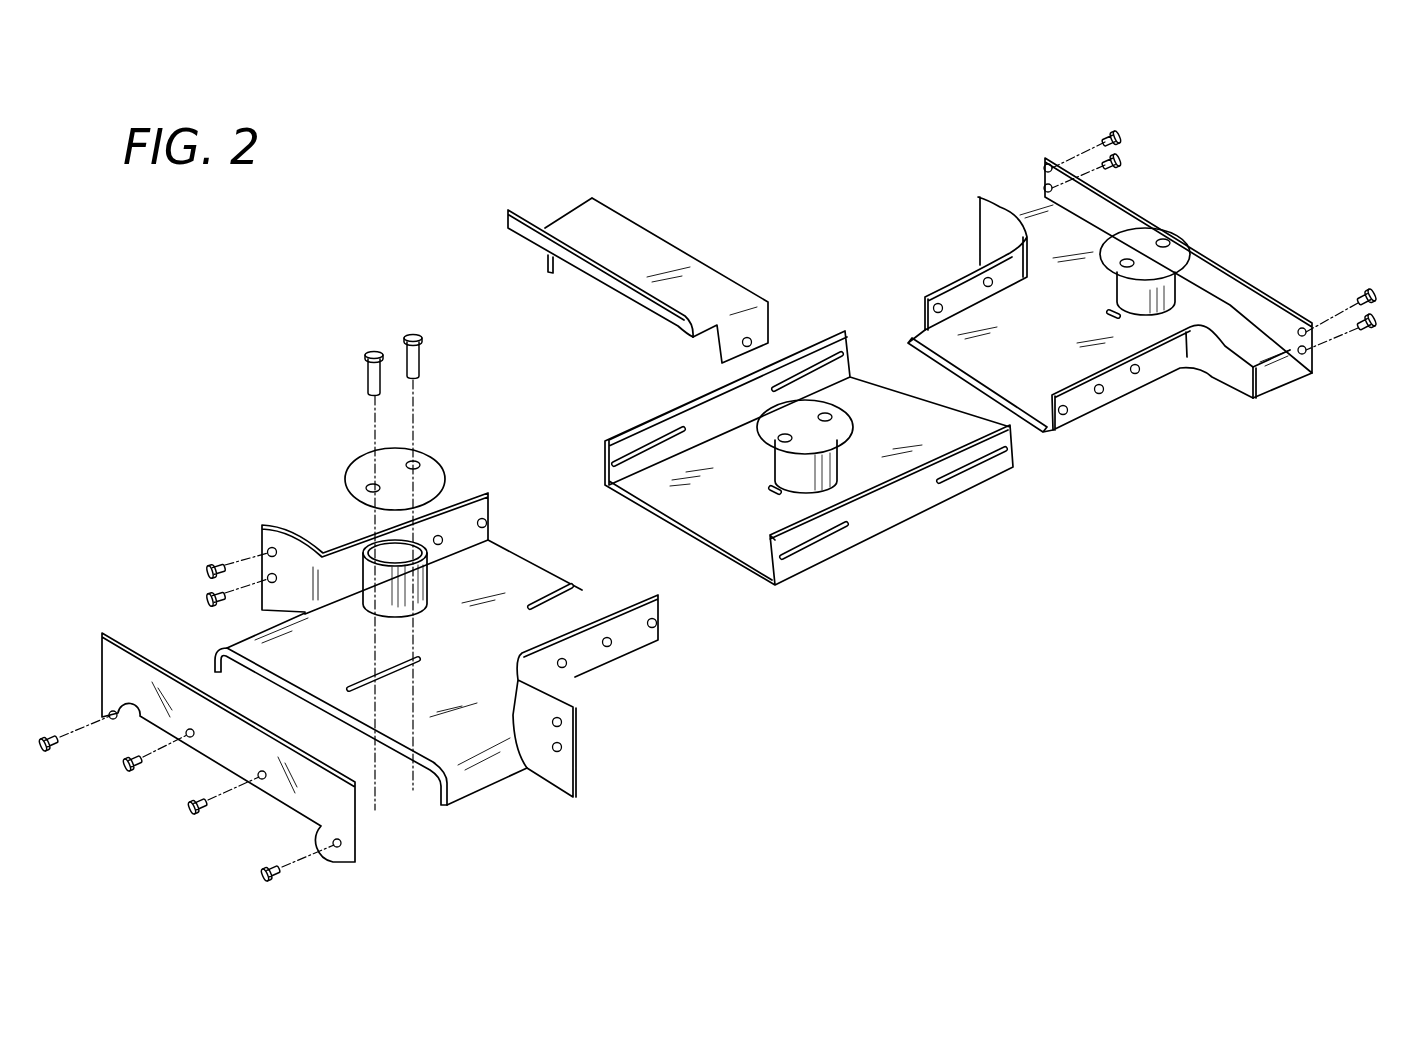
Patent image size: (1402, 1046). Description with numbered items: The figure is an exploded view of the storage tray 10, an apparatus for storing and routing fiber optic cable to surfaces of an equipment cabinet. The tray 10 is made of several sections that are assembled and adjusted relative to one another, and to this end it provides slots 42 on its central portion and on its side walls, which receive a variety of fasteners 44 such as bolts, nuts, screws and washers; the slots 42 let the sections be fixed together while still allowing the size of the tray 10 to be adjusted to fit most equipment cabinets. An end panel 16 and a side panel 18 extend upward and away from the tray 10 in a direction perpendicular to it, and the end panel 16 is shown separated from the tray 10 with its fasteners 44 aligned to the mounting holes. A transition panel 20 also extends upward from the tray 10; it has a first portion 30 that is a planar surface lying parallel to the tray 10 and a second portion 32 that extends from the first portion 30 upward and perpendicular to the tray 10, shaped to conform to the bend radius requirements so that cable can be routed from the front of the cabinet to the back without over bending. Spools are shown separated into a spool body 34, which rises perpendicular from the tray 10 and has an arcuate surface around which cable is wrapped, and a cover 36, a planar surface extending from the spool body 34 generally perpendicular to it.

The storage tray 10 is at (397, 226).
The end panel 16 is at (225, 750).
The side panel 18 is at (592, 662).
The transition panel 20 is at (646, 266).
The first portion 30 is at (707, 286).
The second portion 32 is at (585, 268).
The spool body 34 is at (427, 587).
The cover 36 is at (353, 466).
The slot 42 is at (392, 674).
The fastener 44 is at (420, 336).